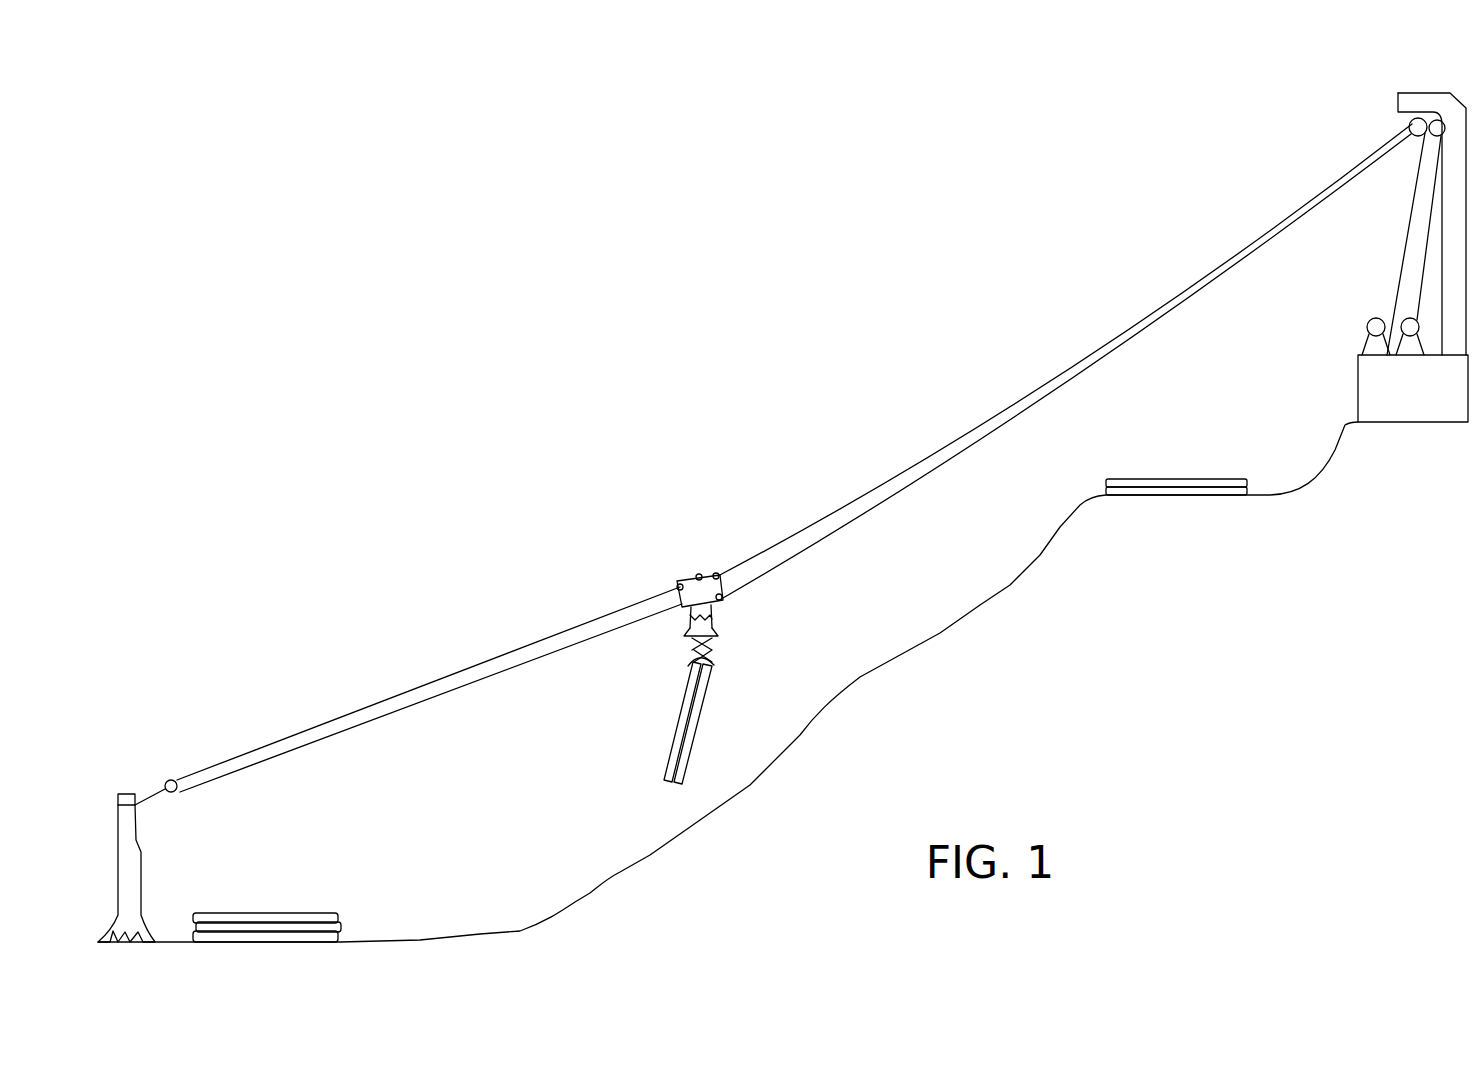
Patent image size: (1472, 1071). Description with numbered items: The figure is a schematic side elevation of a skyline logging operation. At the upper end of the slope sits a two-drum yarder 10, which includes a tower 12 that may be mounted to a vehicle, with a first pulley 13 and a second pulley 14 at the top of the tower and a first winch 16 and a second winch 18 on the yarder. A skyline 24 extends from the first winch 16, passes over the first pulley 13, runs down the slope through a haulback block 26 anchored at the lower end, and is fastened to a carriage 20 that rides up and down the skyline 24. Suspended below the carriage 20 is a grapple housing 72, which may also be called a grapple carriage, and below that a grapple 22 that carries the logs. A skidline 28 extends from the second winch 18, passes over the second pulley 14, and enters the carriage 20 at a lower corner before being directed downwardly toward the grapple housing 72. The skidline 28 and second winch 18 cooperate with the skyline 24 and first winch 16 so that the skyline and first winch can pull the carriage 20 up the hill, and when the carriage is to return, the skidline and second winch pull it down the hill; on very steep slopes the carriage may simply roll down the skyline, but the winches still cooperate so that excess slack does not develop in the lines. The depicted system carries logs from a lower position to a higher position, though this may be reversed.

The two-drum yarder 10 is at (1326, 364).
The tower 12 is at (1440, 92).
The first pulley 13 is at (1408, 129).
The second pulley 14 is at (1426, 140).
The first winch 16 is at (1367, 327).
The second winch 18 is at (1403, 320).
The carriage 20 is at (705, 562).
The grapple 22 is at (730, 668).
The skyline 24 is at (1006, 408).
The haulback block 26 is at (168, 781).
The skidline 28 is at (1047, 400).
The grapple housing 72 is at (740, 626).